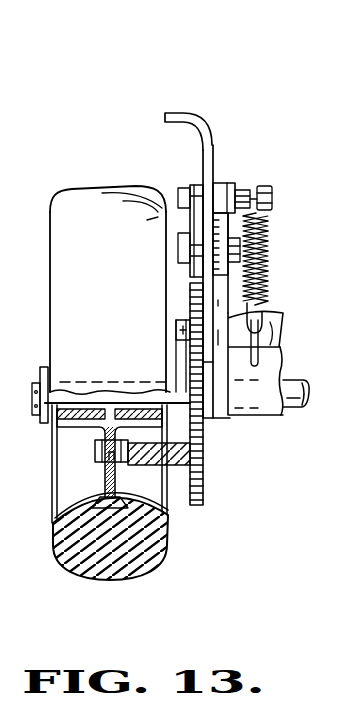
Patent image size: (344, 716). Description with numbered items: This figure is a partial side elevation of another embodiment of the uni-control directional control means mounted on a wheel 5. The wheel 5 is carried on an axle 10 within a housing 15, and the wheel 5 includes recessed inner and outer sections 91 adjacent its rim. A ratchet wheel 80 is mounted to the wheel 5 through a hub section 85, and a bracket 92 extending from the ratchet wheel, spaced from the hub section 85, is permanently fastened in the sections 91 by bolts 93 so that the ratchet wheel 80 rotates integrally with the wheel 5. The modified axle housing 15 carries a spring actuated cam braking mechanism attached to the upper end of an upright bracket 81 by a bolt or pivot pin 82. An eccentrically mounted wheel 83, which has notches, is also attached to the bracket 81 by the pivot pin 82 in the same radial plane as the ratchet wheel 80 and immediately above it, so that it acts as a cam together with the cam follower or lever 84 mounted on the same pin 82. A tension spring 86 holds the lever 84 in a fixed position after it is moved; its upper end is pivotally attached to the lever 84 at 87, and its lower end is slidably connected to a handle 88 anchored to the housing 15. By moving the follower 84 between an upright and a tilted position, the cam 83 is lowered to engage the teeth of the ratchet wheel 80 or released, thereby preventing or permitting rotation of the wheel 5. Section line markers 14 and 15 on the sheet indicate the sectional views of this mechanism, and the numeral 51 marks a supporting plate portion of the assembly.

The wheel 5 is at (78, 192).
The axle 10 is at (303, 388).
The section line 14 is at (210, 80).
The housing 15 is at (282, 352).
The support plate 51 is at (216, 419).
The ratchet wheel 80 is at (203, 455).
The upright bracket 81 is at (284, 313).
The pivot pin 82 is at (268, 244).
The eccentrically mounted wheel 83 is at (196, 186).
The cam follower 84 is at (172, 112).
The hub section 85 is at (190, 327).
The tension spring 86 is at (268, 270).
The pivotal attachment 87 is at (255, 186).
The handle 88 is at (260, 333).
The recessed inner and outer sections 91 is at (70, 506).
The bracket 92 is at (200, 415).
The bolts 93 is at (95, 452).